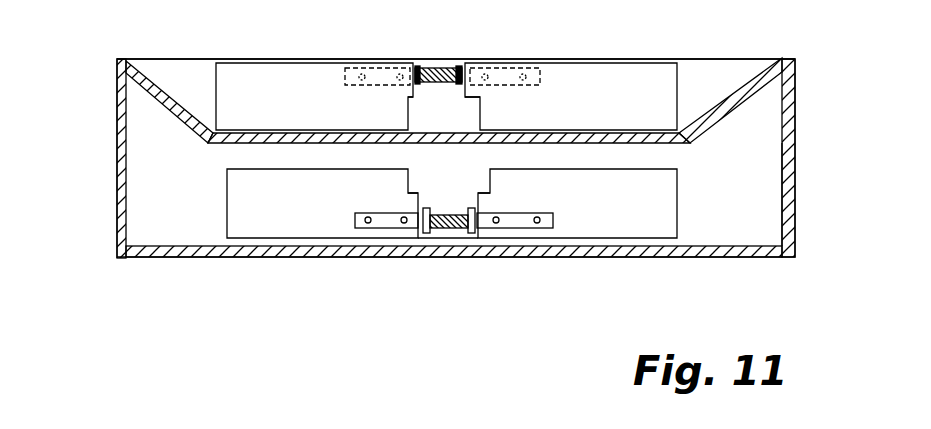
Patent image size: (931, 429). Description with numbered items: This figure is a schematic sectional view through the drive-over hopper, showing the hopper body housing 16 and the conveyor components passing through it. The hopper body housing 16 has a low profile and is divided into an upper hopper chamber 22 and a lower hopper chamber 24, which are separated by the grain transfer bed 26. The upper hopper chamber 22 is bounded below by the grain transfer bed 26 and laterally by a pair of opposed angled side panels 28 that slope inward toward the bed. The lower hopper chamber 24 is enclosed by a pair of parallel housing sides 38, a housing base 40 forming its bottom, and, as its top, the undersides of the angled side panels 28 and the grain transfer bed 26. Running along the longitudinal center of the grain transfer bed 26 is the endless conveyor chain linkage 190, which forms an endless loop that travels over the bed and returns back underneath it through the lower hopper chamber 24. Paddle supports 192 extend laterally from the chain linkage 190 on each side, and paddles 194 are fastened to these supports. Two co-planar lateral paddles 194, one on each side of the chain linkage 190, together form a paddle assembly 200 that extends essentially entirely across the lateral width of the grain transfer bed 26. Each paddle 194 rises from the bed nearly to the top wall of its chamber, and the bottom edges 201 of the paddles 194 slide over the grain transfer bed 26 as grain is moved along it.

The hopper body housing 16 is at (112, 83).
The upper hopper chamber 22 is at (693, 72).
The lower hopper chamber 24 is at (742, 208).
The grain transfer bed 26 is at (667, 141).
The angled side panels 28 is at (160, 90).
The housing sides 38 is at (117, 192).
The housing base 40 is at (627, 258).
The endless conveyor chain linkage 190 is at (438, 68).
The paddle supports 192 is at (372, 66).
The paddles 194 is at (285, 94).
The paddle assembly 200 is at (212, 85).
The bottom edges 201 is at (302, 130).